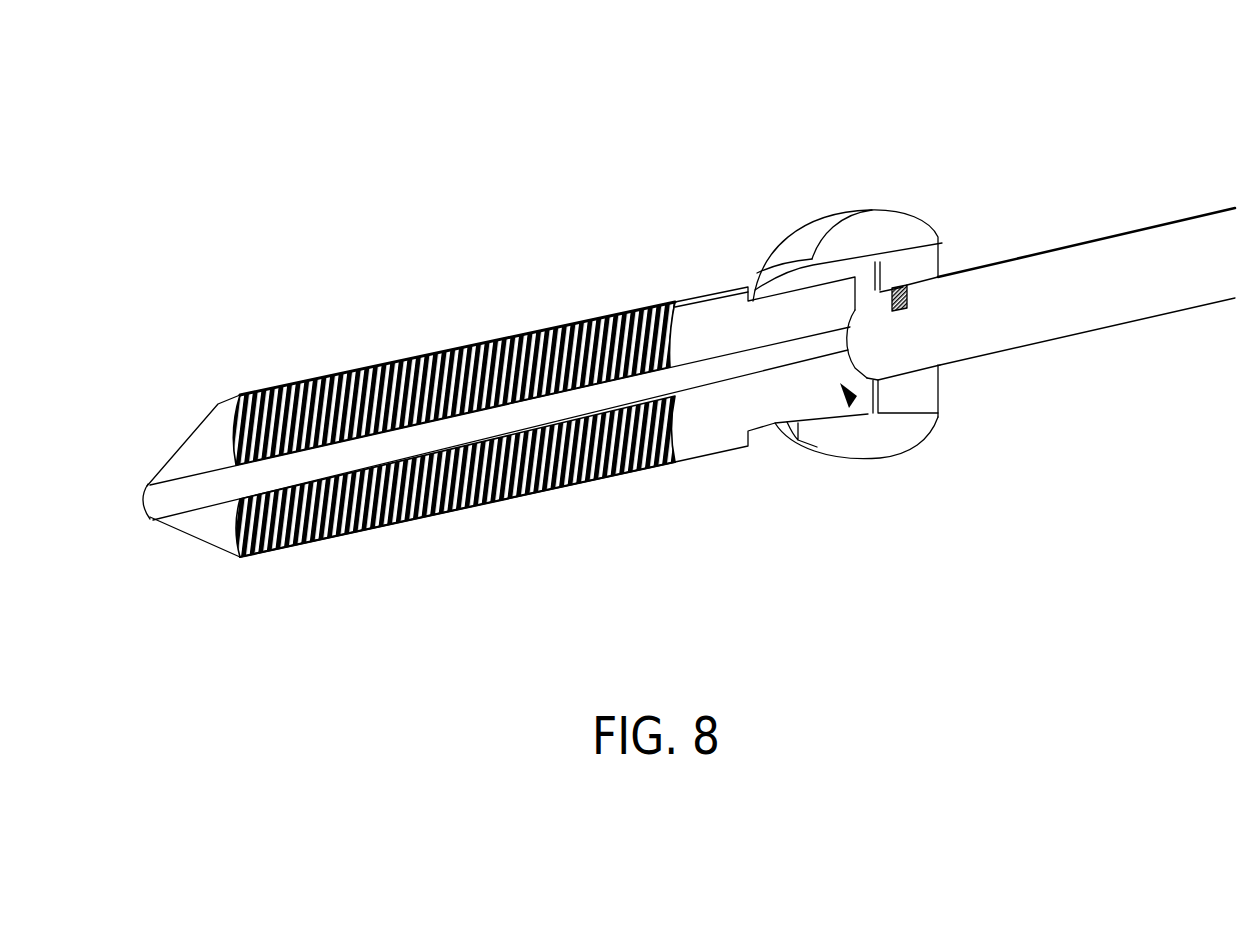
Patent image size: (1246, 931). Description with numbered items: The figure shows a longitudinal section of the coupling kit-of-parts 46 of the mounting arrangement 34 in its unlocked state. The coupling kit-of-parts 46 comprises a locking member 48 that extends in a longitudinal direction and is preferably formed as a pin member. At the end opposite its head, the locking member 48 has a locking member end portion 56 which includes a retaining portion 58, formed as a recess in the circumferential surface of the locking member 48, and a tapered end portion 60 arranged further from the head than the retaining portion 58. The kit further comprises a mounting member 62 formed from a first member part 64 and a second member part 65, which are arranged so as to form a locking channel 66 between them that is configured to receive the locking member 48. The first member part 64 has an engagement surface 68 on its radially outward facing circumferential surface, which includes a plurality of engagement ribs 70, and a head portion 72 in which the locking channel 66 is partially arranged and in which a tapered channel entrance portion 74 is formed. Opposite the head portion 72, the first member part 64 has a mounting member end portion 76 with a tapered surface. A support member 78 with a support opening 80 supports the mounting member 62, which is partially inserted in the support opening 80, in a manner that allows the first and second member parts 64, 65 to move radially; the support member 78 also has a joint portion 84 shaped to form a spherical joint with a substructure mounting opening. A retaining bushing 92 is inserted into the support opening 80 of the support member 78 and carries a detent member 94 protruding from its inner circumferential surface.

The mounting arrangement 34 is at (446, 82).
The coupling kit-of-parts 46 is at (518, 125).
The locking member 48 is at (1098, 268).
The locking member end portion 56 is at (965, 312).
The retaining portion 58 is at (898, 290).
The tapered end portion 60 is at (853, 276).
The mounting member 62 is at (352, 250).
The first member part 64 is at (360, 368).
The second member part 65 is at (363, 537).
The locking channel 66 is at (717, 373).
The engagement surface 68 is at (537, 300).
The engagement ribs 70 is at (636, 296).
The head portion 72 is at (770, 205).
The tapered channel entrance portion 74 is at (848, 397).
The mounting member end portion 76 is at (189, 580).
The support member 78 is at (853, 155).
The support opening 80 is at (872, 410).
The joint portion 84 is at (904, 290).
The retaining bushing 92 is at (925, 388).
The detent member 94 is at (907, 297).